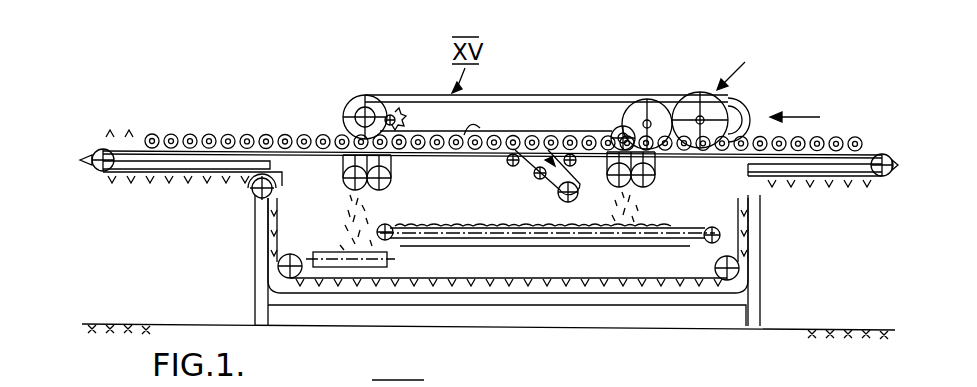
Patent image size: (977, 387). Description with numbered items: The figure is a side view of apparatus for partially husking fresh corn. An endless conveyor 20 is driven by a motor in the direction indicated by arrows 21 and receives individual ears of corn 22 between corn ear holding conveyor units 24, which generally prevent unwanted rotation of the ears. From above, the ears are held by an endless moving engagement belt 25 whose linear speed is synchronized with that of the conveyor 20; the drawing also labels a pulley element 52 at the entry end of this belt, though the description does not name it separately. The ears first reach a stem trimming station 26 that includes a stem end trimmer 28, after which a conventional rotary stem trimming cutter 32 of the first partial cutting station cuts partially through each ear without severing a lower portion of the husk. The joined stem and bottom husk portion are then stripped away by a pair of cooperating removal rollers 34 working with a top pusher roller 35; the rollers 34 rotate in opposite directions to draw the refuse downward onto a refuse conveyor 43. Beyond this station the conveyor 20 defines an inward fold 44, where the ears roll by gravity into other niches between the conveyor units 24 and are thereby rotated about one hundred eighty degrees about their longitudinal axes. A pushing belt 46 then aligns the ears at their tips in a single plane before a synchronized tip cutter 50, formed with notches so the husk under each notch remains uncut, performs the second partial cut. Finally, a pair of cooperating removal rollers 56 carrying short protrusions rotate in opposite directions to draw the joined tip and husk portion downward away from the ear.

The endless conveyor 20 is at (883, 147).
The arrows 21 is at (797, 100).
The ears of corn 22 is at (867, 136).
The corn ear holding conveyor units 24 is at (897, 168).
The endless moving engagement belt 25 is at (506, 97).
The stem trimming station 26 is at (695, 100).
The stem end trimmer 28 is at (744, 64).
The rotary stem trimming cutter 32 is at (644, 100).
The removal rollers 34 is at (649, 180).
The top pusher roller 35 is at (613, 128).
The refuse conveyor 43 is at (632, 240).
The inward fold 44 is at (568, 148).
The pushing belt 46 is at (483, 125).
The synchronized tip cutter 50 is at (406, 113).
The belt pulley 52 is at (393, 97).
The removal rollers 56 is at (344, 176).